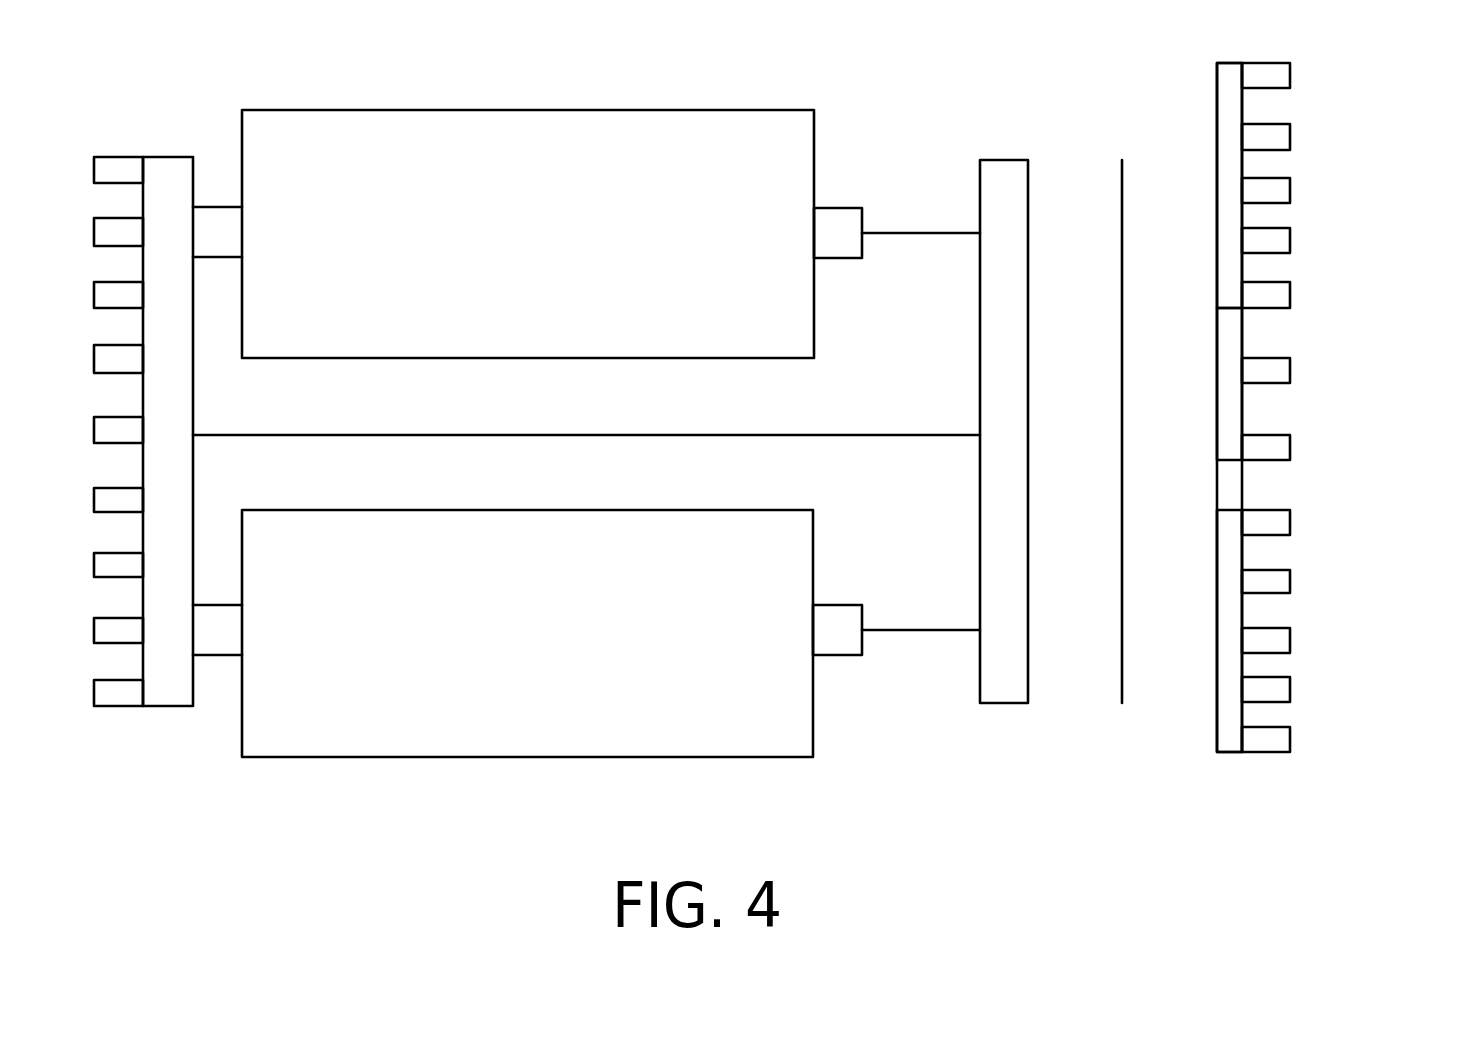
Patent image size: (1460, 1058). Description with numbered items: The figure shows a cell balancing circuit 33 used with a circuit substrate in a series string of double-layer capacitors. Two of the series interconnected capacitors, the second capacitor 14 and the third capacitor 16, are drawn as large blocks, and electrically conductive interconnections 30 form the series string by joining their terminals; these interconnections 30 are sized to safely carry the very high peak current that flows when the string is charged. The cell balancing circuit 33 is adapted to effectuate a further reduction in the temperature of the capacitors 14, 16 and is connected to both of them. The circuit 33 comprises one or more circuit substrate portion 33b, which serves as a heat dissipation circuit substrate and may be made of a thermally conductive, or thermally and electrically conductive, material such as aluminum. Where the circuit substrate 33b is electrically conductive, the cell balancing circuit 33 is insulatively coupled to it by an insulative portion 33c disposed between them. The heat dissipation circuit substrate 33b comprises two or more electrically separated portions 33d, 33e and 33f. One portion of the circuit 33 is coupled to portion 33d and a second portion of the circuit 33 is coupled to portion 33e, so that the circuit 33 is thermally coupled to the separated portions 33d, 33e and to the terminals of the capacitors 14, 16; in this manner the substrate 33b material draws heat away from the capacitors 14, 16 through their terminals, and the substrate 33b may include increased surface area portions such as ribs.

The second capacitor 14 is at (383, 757).
The third capacitor 16 is at (627, 110).
The electrically conductive interconnections 30 is at (165, 706).
The cell balancing circuit 33 is at (1003, 160).
The circuit substrate portion 33b is at (1170, 766).
The insulative portion 33c is at (1122, 255).
The electrically separated portion 33d is at (1290, 140).
The electrically separated portion 33e is at (1290, 582).
The electrically separated portion 33f is at (1290, 358).